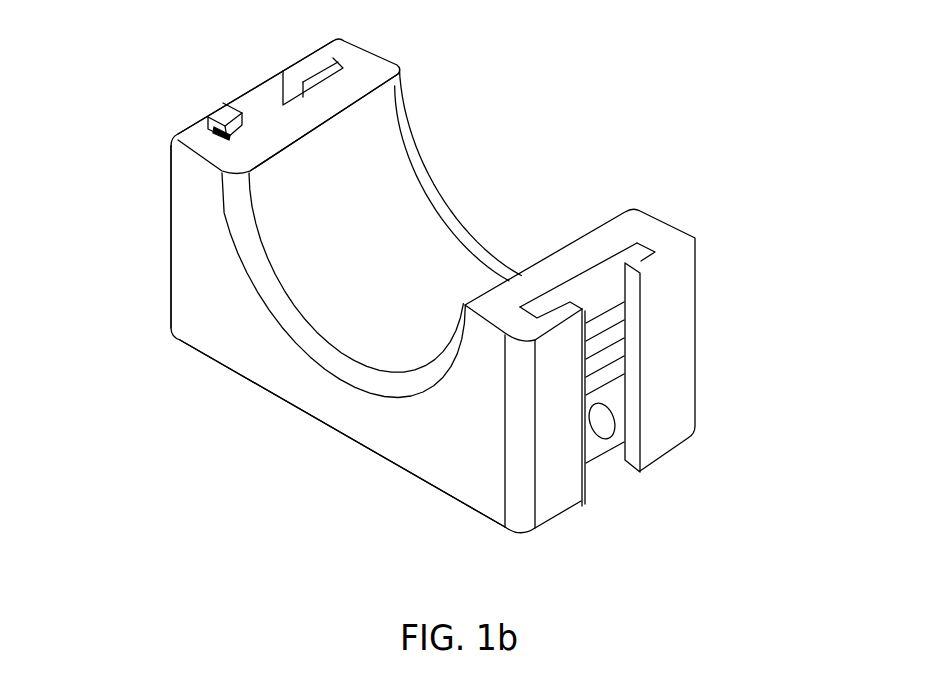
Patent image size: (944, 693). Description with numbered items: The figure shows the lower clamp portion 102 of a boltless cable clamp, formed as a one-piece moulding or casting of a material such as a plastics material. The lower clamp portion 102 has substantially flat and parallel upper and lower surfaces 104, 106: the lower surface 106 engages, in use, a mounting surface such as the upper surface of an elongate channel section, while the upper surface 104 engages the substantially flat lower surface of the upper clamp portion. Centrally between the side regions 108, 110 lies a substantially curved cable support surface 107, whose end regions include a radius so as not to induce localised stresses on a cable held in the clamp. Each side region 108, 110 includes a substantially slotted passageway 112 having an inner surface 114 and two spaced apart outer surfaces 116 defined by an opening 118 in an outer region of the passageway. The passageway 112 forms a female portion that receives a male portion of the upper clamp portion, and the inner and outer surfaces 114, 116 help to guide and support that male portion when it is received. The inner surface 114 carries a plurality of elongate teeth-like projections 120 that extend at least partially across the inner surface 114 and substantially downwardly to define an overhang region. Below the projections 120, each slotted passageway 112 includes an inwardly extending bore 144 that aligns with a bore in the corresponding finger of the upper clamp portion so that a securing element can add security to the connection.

The lower clamp portion 102 is at (448, 289).
The upper surface 104 is at (372, 62).
The lower surface 106 is at (492, 522).
The cable support surface 107 is at (416, 134).
The side region 108 is at (147, 88).
The side region 110 is at (745, 367).
The slotted passageway 112 is at (260, 92).
The inner surface 114 is at (631, 253).
The outer surfaces 116 is at (213, 130).
The opening 118 is at (622, 493).
The teeth-like projections 120 is at (612, 318).
The bore 144 is at (603, 422).